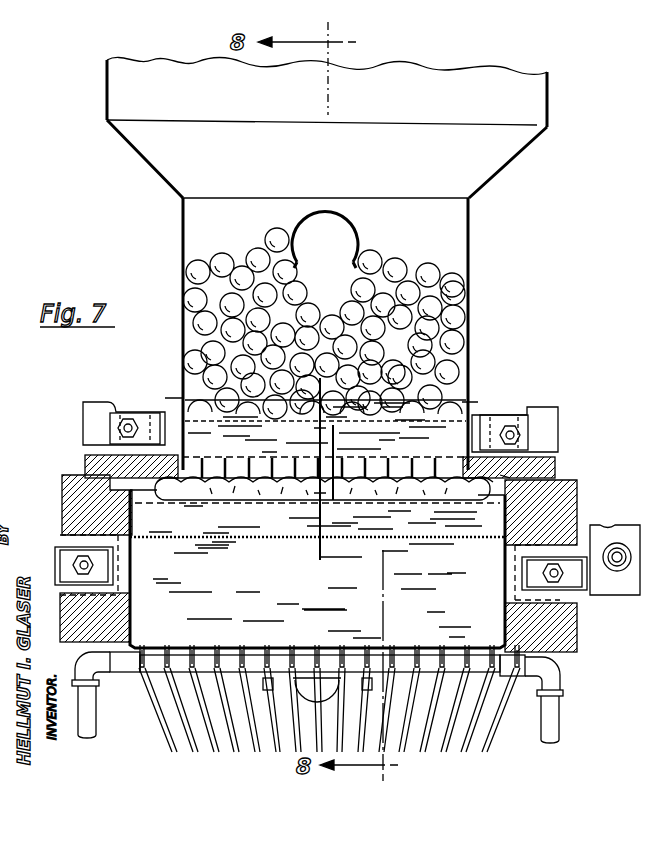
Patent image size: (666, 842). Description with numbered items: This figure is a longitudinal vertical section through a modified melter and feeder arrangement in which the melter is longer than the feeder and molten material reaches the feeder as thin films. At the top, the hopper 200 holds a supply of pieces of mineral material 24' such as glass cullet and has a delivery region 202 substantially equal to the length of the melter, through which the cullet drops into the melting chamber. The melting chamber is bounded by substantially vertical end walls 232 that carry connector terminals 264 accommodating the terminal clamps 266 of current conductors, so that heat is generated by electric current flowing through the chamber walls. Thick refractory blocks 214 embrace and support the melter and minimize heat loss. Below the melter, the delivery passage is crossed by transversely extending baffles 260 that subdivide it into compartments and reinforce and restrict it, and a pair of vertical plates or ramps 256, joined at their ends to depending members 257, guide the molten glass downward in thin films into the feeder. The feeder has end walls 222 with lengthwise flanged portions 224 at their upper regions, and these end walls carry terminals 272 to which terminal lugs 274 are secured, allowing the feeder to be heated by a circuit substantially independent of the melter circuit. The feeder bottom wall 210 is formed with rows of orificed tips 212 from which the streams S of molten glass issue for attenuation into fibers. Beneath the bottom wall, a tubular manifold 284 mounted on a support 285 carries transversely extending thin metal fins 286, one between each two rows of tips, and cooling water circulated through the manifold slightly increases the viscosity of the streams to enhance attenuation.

The hopper 200 is at (551, 102).
The delivery region 202 is at (470, 215).
The pieces of mineral material 24' is at (410, 240).
The end walls of the melting compartment 232 is at (165, 410).
The connector terminals 264 is at (152, 410).
The terminal clamps 266 is at (108, 418).
The longitudinally extending blocks 214 is at (553, 467).
The depending members 257 is at (120, 470).
The lengthwise flanged portions 224 is at (480, 493).
The end walls of the feeder 222 is at (153, 483).
The terminals 272 is at (133, 492).
The terminal lugs 274 is at (62, 547).
The baffles 260 is at (400, 470).
The plates or ramps 256 is at (428, 487).
The bottom wall of the feeder 210 is at (220, 643).
The orificed tips or projections 212 is at (410, 647).
The streams S is at (213, 663).
The tubular manifold 284 is at (133, 673).
The thin metal fins 286 is at (470, 658).
The support 285 is at (308, 707).